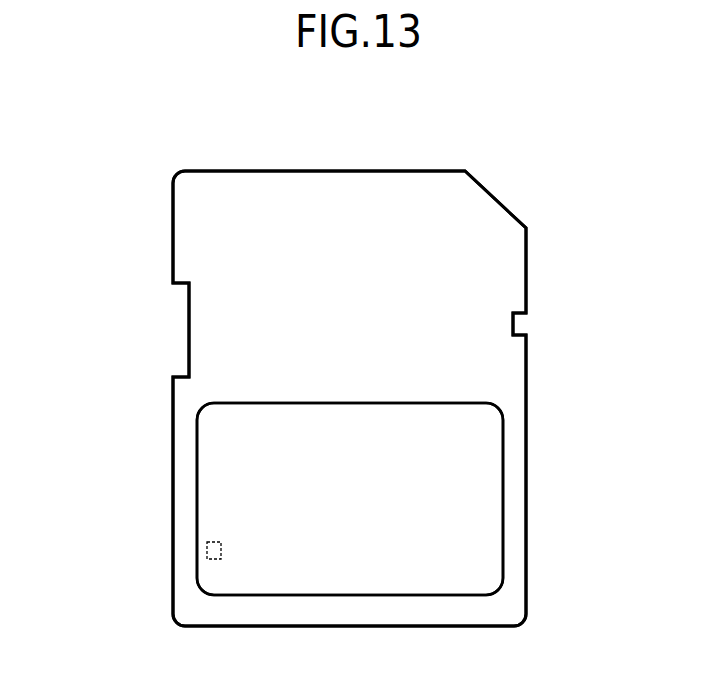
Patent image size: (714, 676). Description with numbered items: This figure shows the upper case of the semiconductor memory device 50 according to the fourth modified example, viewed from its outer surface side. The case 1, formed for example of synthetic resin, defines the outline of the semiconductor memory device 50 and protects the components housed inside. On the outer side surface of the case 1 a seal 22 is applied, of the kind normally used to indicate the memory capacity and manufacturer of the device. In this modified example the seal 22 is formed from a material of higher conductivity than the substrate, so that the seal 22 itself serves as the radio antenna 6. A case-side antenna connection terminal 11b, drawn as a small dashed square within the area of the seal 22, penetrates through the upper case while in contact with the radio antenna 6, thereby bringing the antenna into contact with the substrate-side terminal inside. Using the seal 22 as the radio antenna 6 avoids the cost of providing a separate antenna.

The semiconductor memory device 50 is at (130, 138).
The case 1 is at (172, 222).
The seal 22 is at (503, 437).
The radio antenna 6 is at (477, 520).
The case-side antenna connection terminal 11b is at (207, 549).